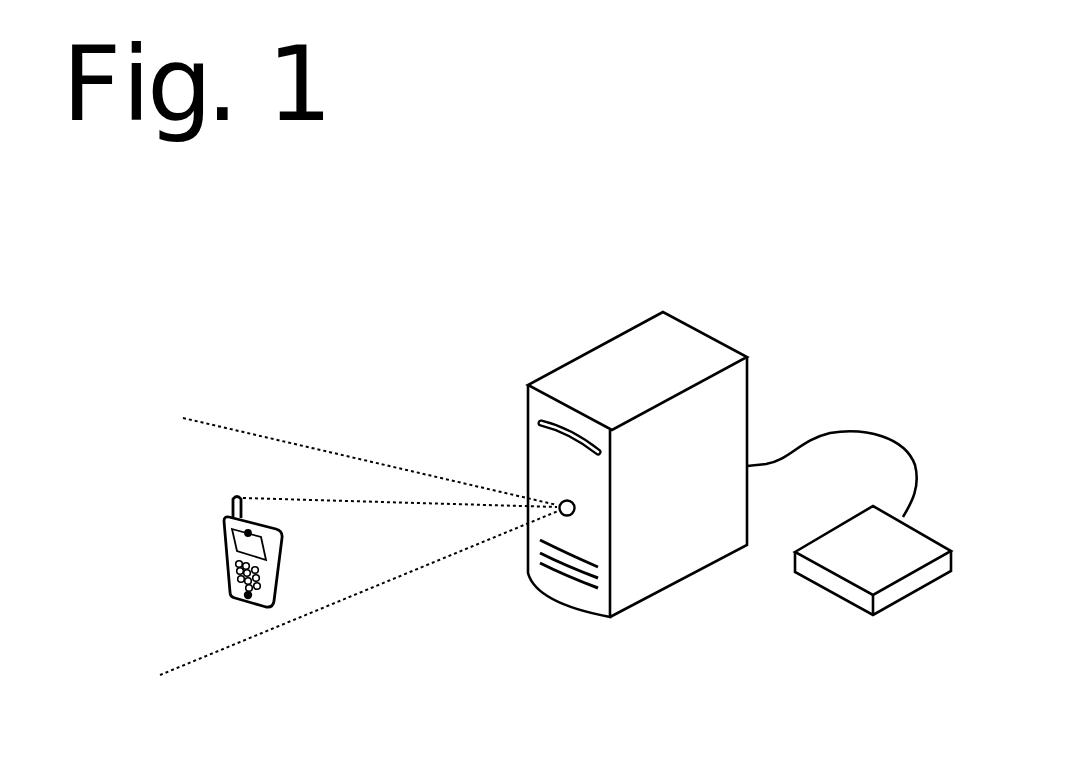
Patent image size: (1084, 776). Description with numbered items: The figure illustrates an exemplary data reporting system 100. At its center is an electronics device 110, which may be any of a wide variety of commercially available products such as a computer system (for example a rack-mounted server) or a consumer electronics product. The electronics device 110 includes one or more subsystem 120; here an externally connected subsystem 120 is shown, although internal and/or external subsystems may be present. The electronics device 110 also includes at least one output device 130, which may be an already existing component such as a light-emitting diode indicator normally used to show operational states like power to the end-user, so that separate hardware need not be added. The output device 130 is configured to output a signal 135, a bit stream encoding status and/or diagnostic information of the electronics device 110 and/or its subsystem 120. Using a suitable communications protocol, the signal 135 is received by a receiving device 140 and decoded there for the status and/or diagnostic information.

The data reporting system 100 is at (746, 214).
The electronics device 110 is at (712, 334).
The subsystem 120 is at (847, 597).
The output device 130 is at (561, 501).
The signal 135 is at (252, 433).
The receiving device 140 is at (283, 566).